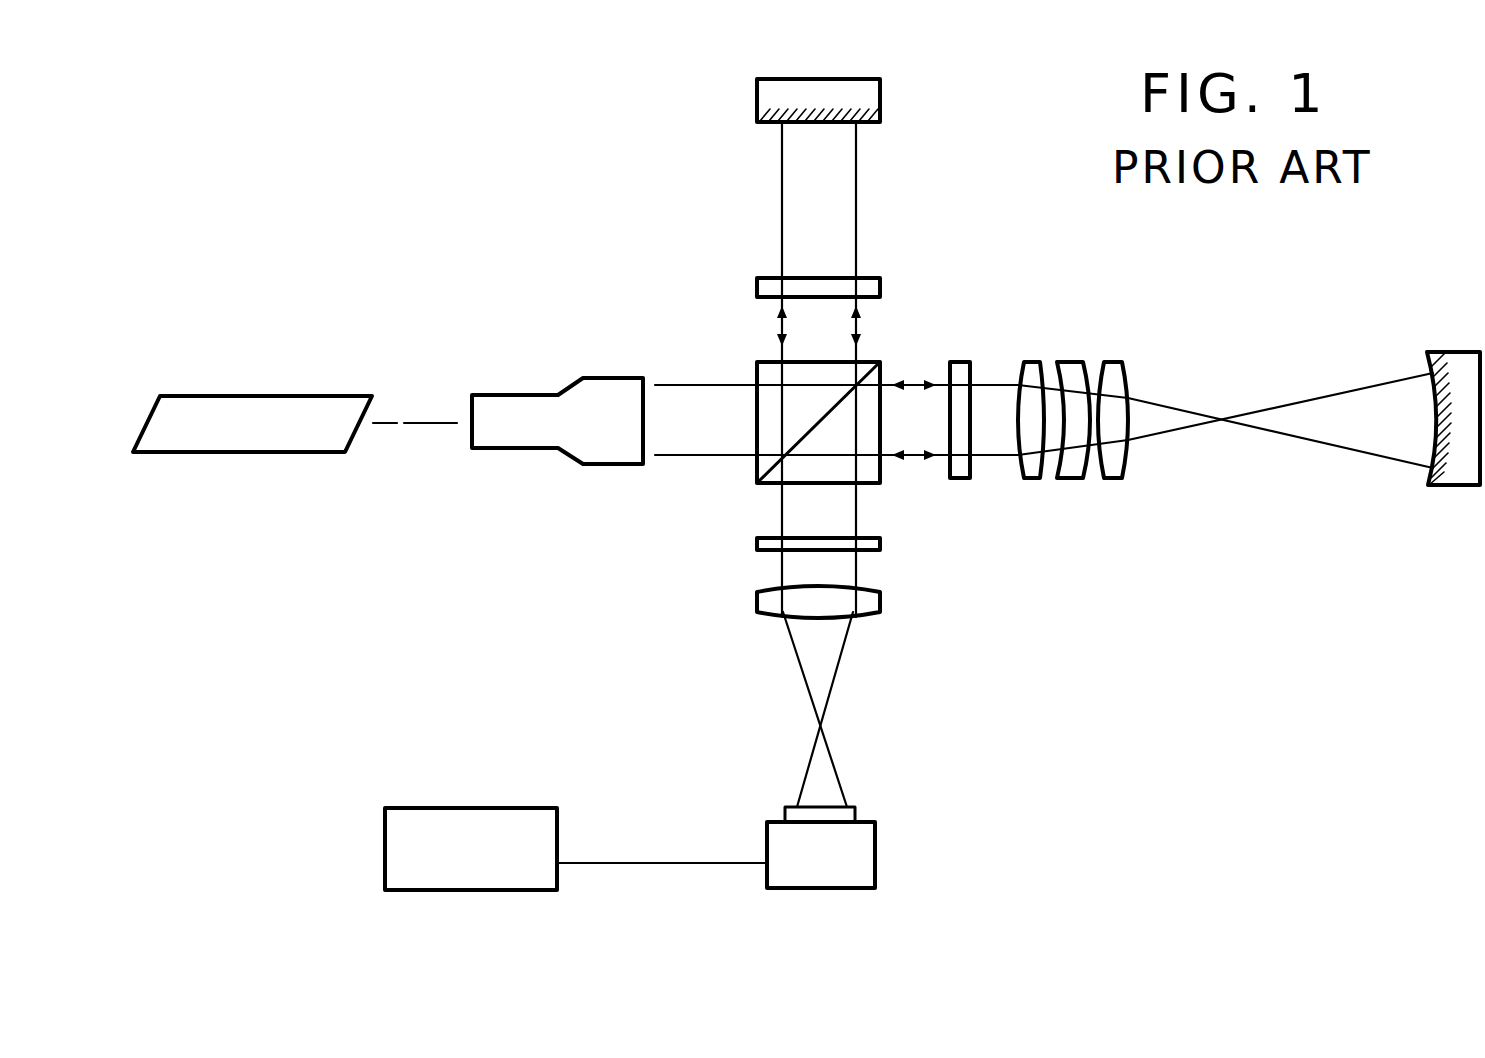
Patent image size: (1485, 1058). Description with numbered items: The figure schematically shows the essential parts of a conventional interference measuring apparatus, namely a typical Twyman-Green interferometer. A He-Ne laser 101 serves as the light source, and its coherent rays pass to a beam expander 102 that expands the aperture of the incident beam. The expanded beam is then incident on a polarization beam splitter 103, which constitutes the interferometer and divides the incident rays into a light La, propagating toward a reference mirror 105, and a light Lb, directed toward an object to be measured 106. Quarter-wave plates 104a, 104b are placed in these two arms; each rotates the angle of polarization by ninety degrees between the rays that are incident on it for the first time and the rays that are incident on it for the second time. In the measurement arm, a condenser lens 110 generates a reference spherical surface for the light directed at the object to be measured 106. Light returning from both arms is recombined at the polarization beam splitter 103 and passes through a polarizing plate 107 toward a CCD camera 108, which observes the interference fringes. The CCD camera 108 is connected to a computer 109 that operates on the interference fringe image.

The He-Ne laser 101 is at (270, 410).
The beam expander 102 is at (545, 410).
The polarization beam splitter 103 is at (765, 365).
The quarter-wave plate 104a is at (870, 282).
The quarter-wave plate 104b is at (960, 358).
The reference mirror 105 is at (765, 122).
The object to be measured 106 is at (1440, 488).
The polarizing plate 107 is at (757, 545).
The CCD camera 108 is at (875, 858).
The computer 109 is at (545, 808).
The condenser lens 110 is at (1127, 493).
The light La is at (857, 334).
The light Lb is at (905, 458).